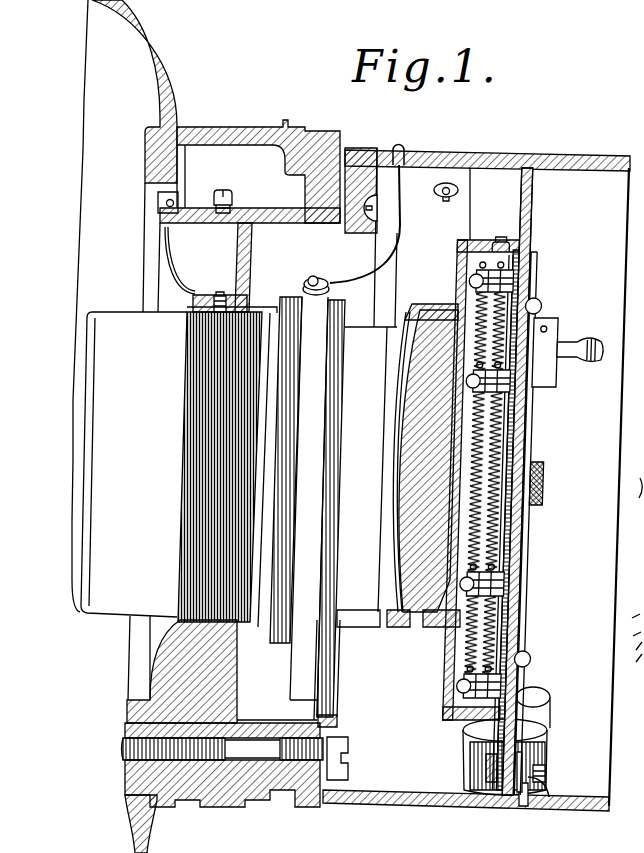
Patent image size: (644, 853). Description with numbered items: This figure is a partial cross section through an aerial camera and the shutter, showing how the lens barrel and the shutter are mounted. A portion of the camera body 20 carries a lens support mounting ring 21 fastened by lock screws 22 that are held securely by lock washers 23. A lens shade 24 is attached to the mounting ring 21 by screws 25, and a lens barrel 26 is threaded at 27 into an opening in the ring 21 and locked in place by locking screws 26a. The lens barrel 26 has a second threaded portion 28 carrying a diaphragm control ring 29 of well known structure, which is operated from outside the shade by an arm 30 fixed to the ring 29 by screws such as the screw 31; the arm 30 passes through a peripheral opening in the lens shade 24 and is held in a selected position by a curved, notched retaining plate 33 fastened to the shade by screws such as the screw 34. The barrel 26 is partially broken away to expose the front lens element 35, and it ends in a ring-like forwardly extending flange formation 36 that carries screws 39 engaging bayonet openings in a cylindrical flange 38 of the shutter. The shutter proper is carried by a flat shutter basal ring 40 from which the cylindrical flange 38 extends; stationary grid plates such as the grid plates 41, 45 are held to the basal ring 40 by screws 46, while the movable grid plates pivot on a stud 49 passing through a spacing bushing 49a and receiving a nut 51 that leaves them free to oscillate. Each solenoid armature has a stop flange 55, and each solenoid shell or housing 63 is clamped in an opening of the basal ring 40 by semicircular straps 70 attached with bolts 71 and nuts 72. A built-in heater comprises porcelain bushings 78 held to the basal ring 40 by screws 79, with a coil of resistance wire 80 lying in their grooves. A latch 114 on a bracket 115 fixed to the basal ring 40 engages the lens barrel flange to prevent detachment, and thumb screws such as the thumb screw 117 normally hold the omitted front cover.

The body of an aerial camera 20 is at (167, 80).
The lens support mounting ring 21 is at (286, 127).
The lock screws 22 is at (348, 767).
The lock washers 23 is at (338, 732).
The lens shade 24 is at (573, 149).
The screws 25 is at (373, 211).
The lens barrel 26 is at (113, 601).
The locking screws 26a is at (222, 292).
The threaded portion of lens barrel 27 is at (192, 456).
The second threaded portion 28 is at (334, 530).
The diaphragm control ring 29 is at (318, 457).
The arm 30 is at (387, 262).
The screw 31 is at (312, 275).
The curved retaining plate 33 is at (471, 183).
The screw 34 is at (447, 199).
The front lens element 35 is at (430, 420).
The flange formation 36 is at (450, 705).
The cylindrical flange 38 is at (466, 722).
The screws 39 is at (498, 241).
The shutter basal ring 40 is at (529, 216).
The grid plate 41 is at (514, 630).
The grid plate 45 is at (516, 553).
The screws 46 is at (540, 307).
The stud 49 is at (545, 775).
The spacing bushing 49a is at (524, 798).
The nut 51 is at (550, 797).
The flange 55 is at (540, 698).
The solenoid shell or housing 63 is at (538, 711).
The semicircular straps 70 is at (547, 742).
The bolts 71 is at (492, 763).
The nuts 72 is at (503, 767).
The porcelain bushings 78 is at (523, 284).
The screws 79 is at (472, 281).
The coil of resistance wire 80 is at (504, 440).
The latch 114 is at (590, 360).
The bracket 115 is at (549, 381).
The thumb screw 117 is at (544, 487).